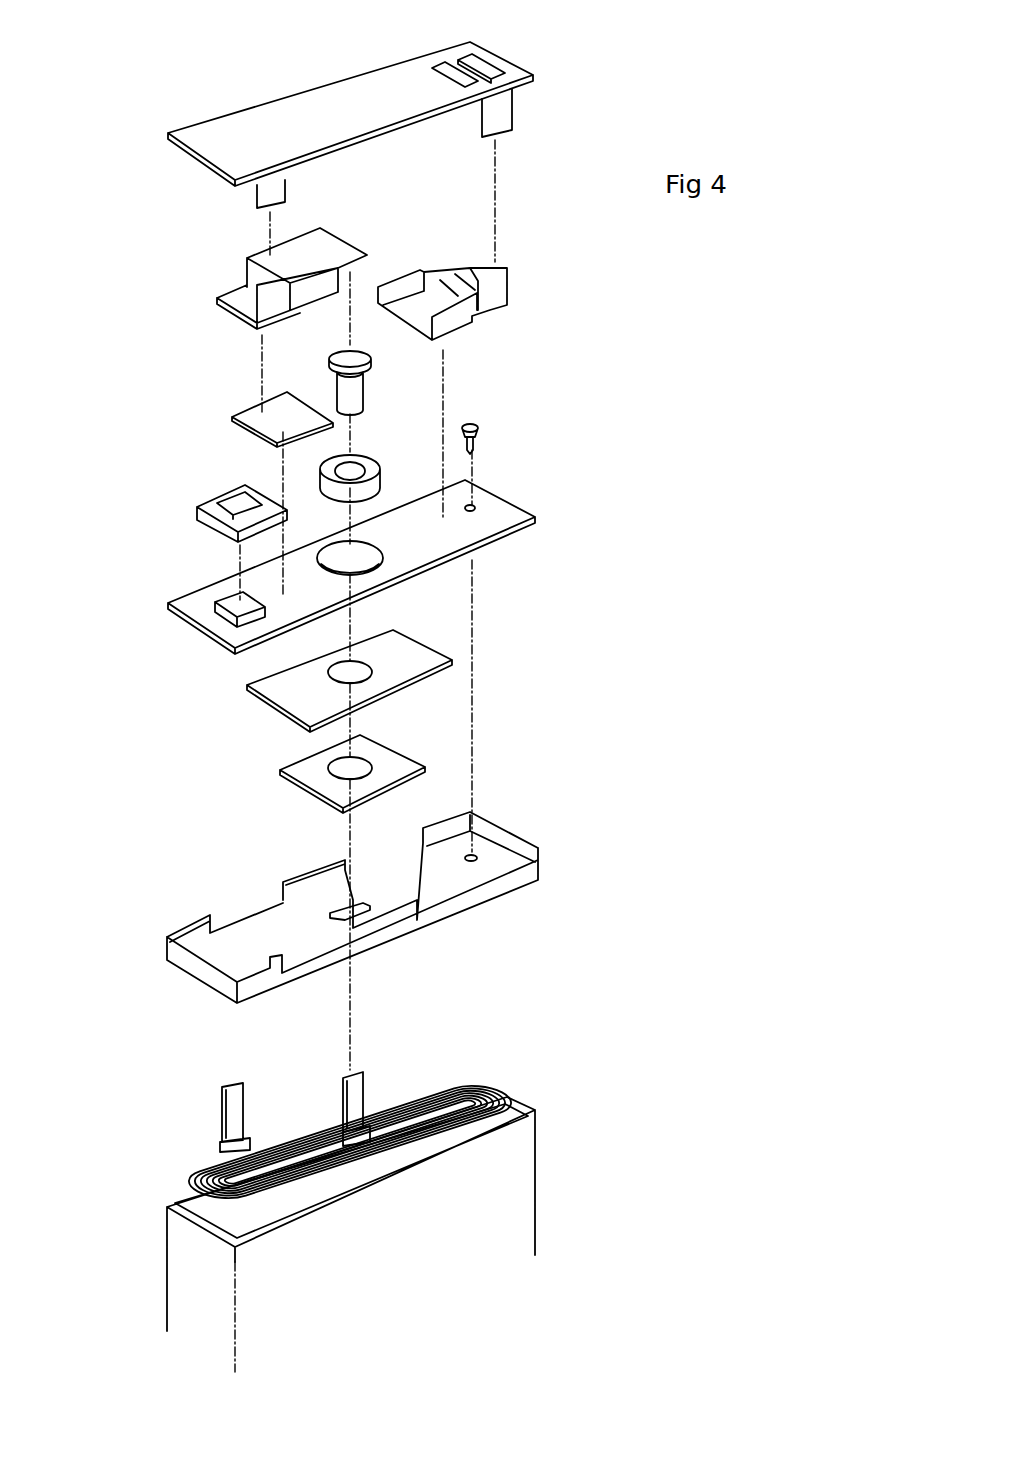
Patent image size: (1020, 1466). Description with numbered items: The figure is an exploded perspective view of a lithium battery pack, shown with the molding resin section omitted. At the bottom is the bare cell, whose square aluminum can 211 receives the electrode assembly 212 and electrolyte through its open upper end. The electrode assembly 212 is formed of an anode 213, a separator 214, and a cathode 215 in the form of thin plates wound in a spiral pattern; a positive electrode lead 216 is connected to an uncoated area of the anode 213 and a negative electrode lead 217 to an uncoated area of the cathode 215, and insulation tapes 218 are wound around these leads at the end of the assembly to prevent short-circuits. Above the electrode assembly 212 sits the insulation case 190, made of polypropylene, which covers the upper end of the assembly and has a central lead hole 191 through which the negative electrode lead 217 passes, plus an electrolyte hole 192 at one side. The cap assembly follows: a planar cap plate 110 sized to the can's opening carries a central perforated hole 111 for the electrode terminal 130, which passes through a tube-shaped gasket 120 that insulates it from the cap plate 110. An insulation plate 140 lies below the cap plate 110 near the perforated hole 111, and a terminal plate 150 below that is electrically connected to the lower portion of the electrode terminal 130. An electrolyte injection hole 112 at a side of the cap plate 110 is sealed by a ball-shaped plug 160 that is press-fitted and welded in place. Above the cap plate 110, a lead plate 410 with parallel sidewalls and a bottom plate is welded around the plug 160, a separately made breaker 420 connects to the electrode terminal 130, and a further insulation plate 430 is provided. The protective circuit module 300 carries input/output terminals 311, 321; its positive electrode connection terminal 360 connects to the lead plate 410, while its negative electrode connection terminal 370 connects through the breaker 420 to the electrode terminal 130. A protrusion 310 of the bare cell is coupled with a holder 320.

The cap plate 110 is at (197, 600).
The perforated hole 111 is at (393, 543).
The electrolyte injection hole 112 is at (472, 507).
The gasket 120 is at (327, 467).
The electrode terminal 130 is at (337, 353).
The insulation plate 140 is at (287, 697).
The terminal plate 150 is at (317, 773).
The plug 160 is at (470, 423).
The insulation case 190 is at (145, 899).
The lead hole 191 is at (340, 910).
The electrolyte hole 192 is at (472, 855).
The can 211 is at (521, 1185).
The electrode assembly 212 is at (480, 990).
The anode 213 is at (502, 1084).
The separator 214 is at (484, 1084).
The cathode 215 is at (461, 1082).
The positive electrode lead 216 is at (240, 1123).
The negative electrode lead 217 is at (360, 1099).
The insulation tapes 218 is at (373, 1136).
The protective circuit module 300 is at (263, 120).
The protrusion 310 is at (185, 622).
The input/output terminal 311 is at (483, 62).
The holder 320 is at (213, 507).
The input/output terminal 321 is at (447, 67).
The positive electrode connection terminal 360 is at (503, 115).
The negative electrode connection terminal 370 is at (273, 188).
The lead plate 410 is at (497, 295).
The breaker 420 is at (263, 257).
The insulation plate 430 is at (257, 410).